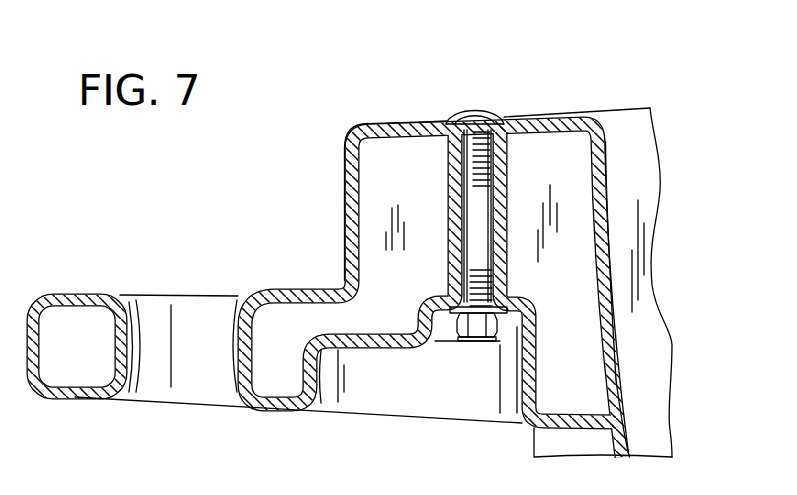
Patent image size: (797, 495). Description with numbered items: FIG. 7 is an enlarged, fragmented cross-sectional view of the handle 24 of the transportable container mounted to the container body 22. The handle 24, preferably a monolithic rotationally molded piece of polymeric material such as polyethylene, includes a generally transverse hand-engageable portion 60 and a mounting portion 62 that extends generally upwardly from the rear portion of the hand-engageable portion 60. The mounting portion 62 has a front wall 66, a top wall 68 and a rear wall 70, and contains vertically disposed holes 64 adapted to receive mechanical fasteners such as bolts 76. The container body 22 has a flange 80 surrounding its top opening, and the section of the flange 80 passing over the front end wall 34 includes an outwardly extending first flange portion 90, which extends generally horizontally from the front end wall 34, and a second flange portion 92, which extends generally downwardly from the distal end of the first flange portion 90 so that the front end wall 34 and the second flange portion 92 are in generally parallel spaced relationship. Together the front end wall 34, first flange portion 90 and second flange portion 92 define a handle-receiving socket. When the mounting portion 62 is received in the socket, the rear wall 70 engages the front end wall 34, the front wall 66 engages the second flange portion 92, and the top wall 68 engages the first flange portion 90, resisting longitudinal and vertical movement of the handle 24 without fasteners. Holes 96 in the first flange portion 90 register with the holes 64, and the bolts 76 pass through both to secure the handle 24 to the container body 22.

The container body 22 is at (650, 197).
The handle 24 is at (598, 78).
The front end wall 34 is at (618, 298).
The hand-engageable portion 60 is at (173, 284).
The mounting portion 62 is at (351, 128).
The holes 64 is at (503, 152).
The front wall 66 is at (346, 221).
The top wall 68 is at (410, 127).
The rear wall 70 is at (600, 240).
The bolts 76 is at (475, 108).
The flange 80 is at (367, 116).
The first flange portion 90 is at (437, 127).
The second flange portion 92 is at (345, 186).
The holes 96 is at (488, 115).